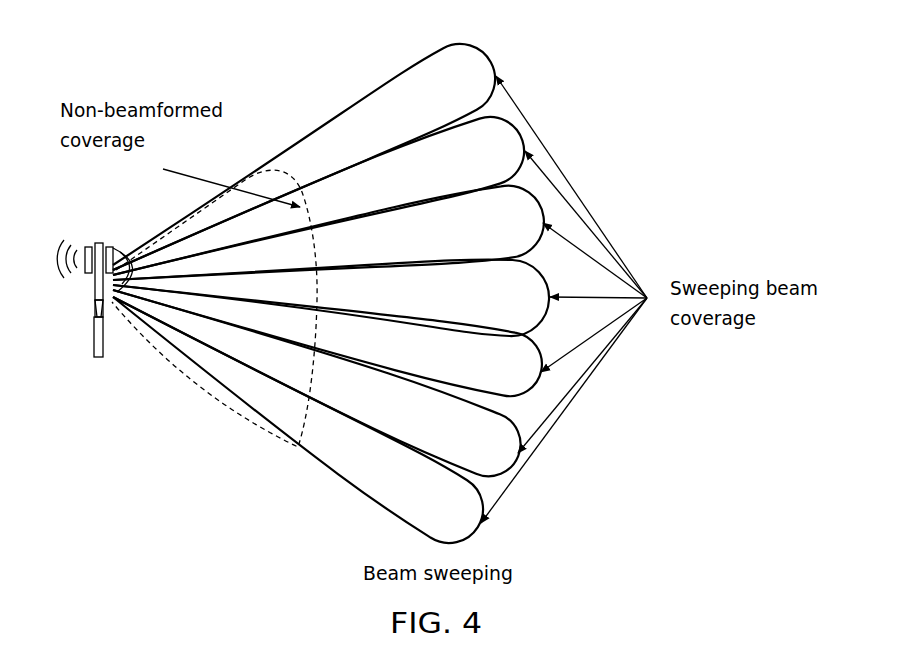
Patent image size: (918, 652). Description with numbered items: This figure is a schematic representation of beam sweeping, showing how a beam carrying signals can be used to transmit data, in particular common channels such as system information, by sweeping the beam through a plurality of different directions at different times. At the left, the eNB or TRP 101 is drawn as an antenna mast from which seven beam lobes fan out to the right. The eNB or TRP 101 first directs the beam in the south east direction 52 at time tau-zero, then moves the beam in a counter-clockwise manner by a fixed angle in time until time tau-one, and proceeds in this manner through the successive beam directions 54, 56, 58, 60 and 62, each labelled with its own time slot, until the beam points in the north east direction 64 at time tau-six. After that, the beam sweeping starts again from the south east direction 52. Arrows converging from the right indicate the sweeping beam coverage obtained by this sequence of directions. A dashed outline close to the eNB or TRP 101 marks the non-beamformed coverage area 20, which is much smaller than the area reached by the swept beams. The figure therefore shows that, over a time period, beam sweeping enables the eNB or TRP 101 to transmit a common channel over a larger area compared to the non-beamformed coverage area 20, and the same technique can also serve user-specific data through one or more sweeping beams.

The eNB or TRP 101 is at (98, 357).
The non-beamformed coverage area 20 is at (200, 388).
The south east direction 52 is at (357, 493).
The beam direction 54 is at (497, 463).
The beam direction 56 is at (530, 393).
The beam direction 58 is at (533, 288).
The beam direction 60 is at (540, 208).
The beam direction 62 is at (513, 133).
The north east direction 64 is at (468, 53).